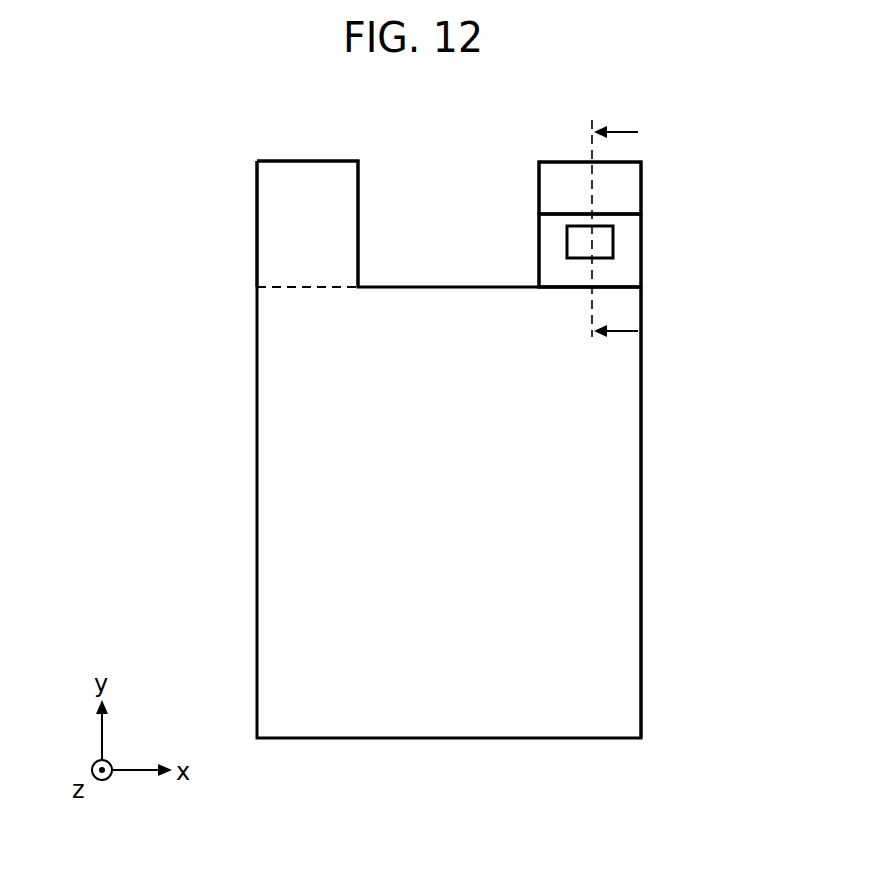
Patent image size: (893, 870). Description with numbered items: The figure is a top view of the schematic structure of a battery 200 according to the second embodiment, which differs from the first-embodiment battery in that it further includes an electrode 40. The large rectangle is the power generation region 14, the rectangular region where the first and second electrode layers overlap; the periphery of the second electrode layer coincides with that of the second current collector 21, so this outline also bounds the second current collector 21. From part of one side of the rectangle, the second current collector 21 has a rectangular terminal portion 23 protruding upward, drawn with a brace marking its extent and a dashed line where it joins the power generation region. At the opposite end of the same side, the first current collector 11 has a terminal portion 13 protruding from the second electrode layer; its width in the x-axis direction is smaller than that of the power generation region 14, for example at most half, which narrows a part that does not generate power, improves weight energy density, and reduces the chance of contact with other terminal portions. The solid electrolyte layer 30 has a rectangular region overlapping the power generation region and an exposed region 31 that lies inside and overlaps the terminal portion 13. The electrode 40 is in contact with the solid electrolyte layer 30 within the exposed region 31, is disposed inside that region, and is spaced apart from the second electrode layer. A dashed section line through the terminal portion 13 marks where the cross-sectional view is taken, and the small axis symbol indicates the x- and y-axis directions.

The battery 200 is at (223, 151).
The second current collector 21 is at (257, 437).
The terminal portion 23 is at (250, 161).
The terminal portion 13 is at (650, 162).
The first current collector 11 is at (539, 186).
The exposed region 31 is at (549, 225).
The electrode 40 is at (567, 245).
The solid electrolyte layer 30 is at (539, 268).
The power generation region 14 is at (687, 512).